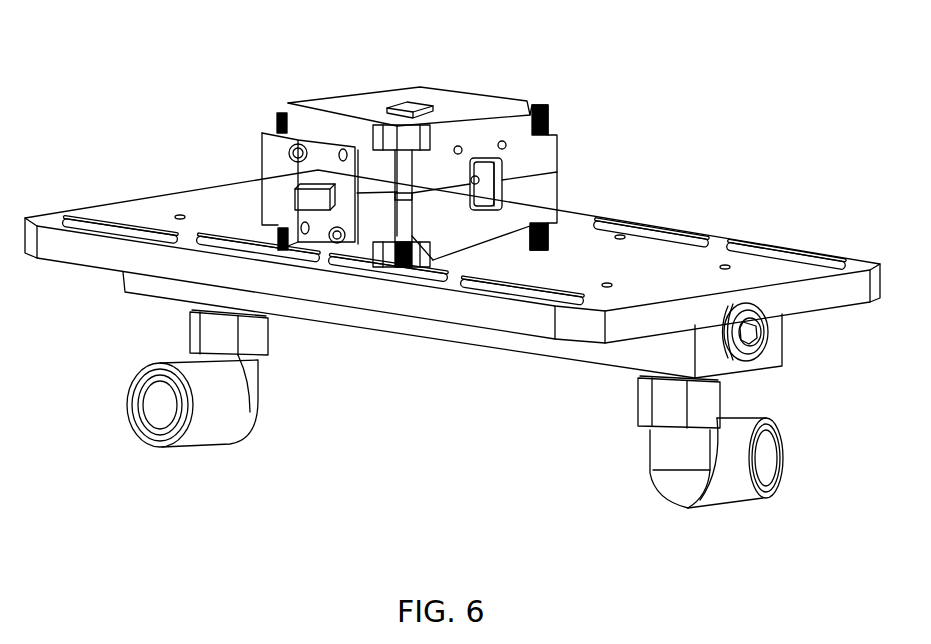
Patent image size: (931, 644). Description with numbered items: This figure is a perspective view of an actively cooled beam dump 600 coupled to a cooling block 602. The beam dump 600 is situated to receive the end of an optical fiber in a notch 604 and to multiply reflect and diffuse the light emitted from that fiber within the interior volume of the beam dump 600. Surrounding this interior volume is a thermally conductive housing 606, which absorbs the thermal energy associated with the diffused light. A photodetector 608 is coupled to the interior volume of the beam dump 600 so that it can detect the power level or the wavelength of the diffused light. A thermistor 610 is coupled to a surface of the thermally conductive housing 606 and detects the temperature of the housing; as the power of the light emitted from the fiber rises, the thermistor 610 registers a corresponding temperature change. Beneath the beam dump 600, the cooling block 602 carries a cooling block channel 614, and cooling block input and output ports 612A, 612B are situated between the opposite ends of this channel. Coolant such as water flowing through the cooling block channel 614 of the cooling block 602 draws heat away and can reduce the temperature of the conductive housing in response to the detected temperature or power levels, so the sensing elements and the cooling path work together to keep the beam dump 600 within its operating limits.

The beam dump 600 is at (452, 292).
The cooling block 602 is at (681, 254).
The notch 604 is at (476, 182).
The thermally conductive housing 606 is at (276, 152).
The photodetector 608 is at (305, 193).
The thermistor 610 is at (405, 105).
The cooling block input port 612A is at (150, 412).
The cooling block output port 612B is at (743, 472).
The cooling block channel 614 is at (433, 338).